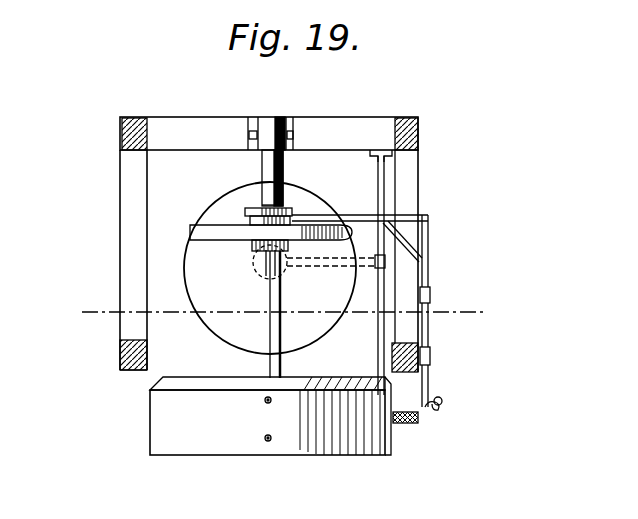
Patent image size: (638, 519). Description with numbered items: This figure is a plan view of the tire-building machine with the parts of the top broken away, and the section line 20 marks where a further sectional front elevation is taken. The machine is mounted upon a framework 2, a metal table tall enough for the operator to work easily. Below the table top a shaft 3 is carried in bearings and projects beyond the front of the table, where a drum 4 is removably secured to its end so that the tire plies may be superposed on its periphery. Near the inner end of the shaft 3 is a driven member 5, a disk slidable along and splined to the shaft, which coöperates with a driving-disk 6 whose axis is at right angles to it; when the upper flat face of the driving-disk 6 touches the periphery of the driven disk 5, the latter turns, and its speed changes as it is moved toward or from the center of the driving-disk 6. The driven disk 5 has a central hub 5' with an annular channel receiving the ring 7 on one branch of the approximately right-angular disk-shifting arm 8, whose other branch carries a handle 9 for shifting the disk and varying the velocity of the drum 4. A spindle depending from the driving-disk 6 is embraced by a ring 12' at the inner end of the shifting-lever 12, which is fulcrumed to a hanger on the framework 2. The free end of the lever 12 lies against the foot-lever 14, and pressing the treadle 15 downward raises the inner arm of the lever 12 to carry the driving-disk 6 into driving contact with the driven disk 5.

The framework 2 is at (122, 134).
The shaft 3 is at (270, 327).
The drum 4 is at (270, 416).
The driven member 5 is at (271, 248).
The central hub 5' is at (298, 185).
The driving-disk 6 is at (270, 268).
The ring 7 is at (246, 213).
The disk-shifting arm 8 is at (313, 216).
The handle 9 is at (440, 398).
The shifting-lever 12 is at (370, 280).
The ring 12' is at (313, 270).
The foot-lever 14 is at (383, 327).
The treadle 15 is at (418, 418).
The section line 20 is at (275, 308).